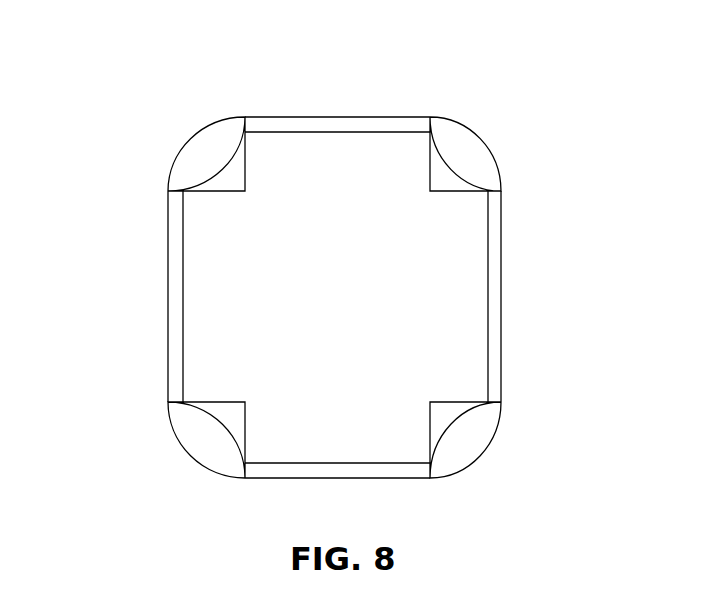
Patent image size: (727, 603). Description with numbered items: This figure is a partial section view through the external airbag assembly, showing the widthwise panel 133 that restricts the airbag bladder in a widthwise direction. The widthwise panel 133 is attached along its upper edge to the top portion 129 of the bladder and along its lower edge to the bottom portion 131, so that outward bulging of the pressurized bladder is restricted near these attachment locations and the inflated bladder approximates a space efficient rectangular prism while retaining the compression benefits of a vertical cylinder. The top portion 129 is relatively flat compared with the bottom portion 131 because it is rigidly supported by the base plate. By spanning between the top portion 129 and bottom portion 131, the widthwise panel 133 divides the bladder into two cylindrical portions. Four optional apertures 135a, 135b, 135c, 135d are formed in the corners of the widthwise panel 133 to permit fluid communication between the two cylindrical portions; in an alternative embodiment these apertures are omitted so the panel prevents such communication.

The top portion 129 is at (337, 117).
The bottom portion 131 is at (350, 478).
The widthwise panel 133 is at (237, 247).
The aperture 135a is at (202, 150).
The aperture 135b is at (472, 155).
The aperture 135c is at (192, 423).
The aperture 135d is at (470, 428).